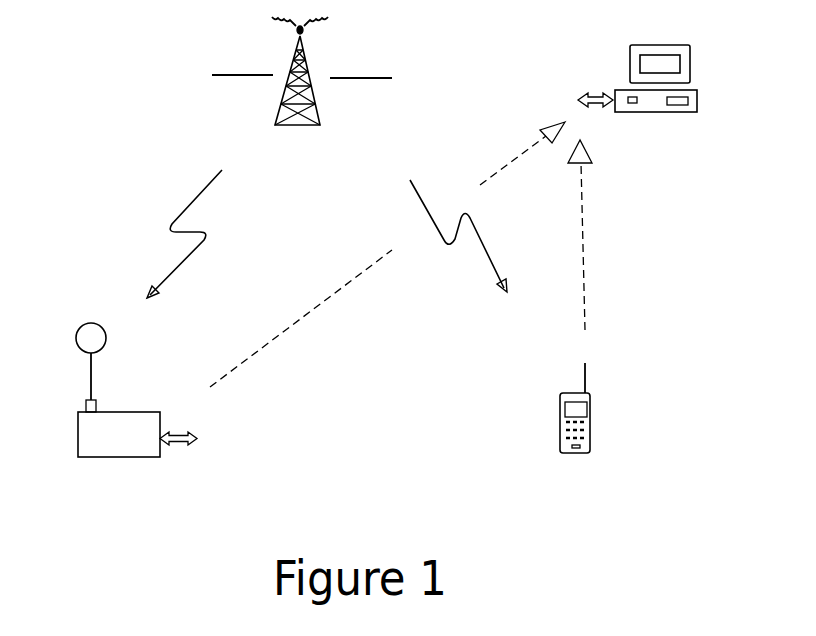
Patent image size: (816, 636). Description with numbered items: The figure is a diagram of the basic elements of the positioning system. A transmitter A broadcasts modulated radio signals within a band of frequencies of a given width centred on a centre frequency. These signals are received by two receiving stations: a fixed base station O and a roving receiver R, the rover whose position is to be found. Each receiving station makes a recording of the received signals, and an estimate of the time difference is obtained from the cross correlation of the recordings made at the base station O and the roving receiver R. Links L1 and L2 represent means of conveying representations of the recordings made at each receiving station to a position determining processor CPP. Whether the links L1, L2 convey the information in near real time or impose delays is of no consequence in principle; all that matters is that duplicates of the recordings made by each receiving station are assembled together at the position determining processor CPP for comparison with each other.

The transmitter A is at (310, 125).
The position determining processor CPP is at (657, 102).
The fixed base station O is at (148, 447).
The roving receiver R is at (568, 443).
The link L1 is at (290, 322).
The link L2 is at (585, 263).